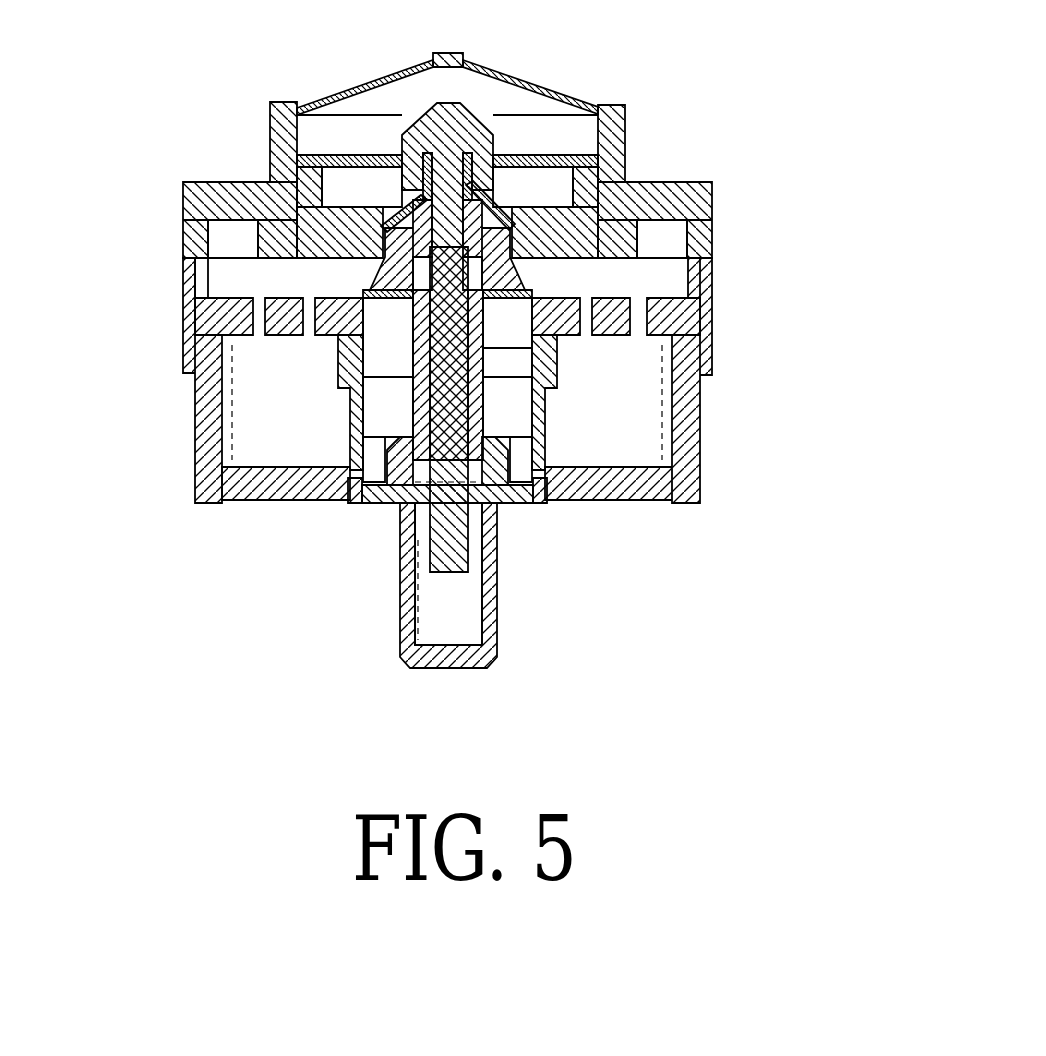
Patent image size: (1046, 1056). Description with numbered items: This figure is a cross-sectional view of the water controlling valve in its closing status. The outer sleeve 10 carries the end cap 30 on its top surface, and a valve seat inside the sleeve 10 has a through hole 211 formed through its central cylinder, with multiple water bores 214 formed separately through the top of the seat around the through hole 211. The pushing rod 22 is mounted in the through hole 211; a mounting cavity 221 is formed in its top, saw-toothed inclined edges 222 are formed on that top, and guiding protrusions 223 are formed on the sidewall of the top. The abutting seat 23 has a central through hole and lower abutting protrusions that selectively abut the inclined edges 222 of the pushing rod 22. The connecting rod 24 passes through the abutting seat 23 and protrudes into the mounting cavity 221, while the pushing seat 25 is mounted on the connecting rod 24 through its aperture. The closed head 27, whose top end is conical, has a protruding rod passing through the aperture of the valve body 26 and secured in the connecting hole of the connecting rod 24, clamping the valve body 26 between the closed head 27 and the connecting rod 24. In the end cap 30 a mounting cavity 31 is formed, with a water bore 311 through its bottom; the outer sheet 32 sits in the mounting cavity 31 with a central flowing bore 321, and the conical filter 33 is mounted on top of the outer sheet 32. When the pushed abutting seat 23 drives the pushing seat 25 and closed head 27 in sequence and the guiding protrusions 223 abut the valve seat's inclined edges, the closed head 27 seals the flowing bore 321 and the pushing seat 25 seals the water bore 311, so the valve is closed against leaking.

The sleeve 10 is at (690, 450).
The through hole 211 is at (305, 337).
The water bores 214 is at (255, 315).
The pushing rod 22 is at (460, 667).
The mounting cavity 221 is at (420, 615).
The inclined edges 222 is at (367, 425).
The guiding protrusions 223 is at (377, 450).
The abutting seat 23 is at (483, 397).
The connecting rod 24 is at (450, 485).
The pushing seat 25 is at (500, 340).
The valve body 26 is at (585, 262).
The closed head 27 is at (437, 108).
The end cap 30 is at (700, 205).
The mounting cavity 31 is at (352, 187).
The water bore 311 is at (377, 250).
The outer sheet 32 is at (600, 160).
The flowing bore 321 is at (497, 160).
The conical filter 33 is at (480, 70).